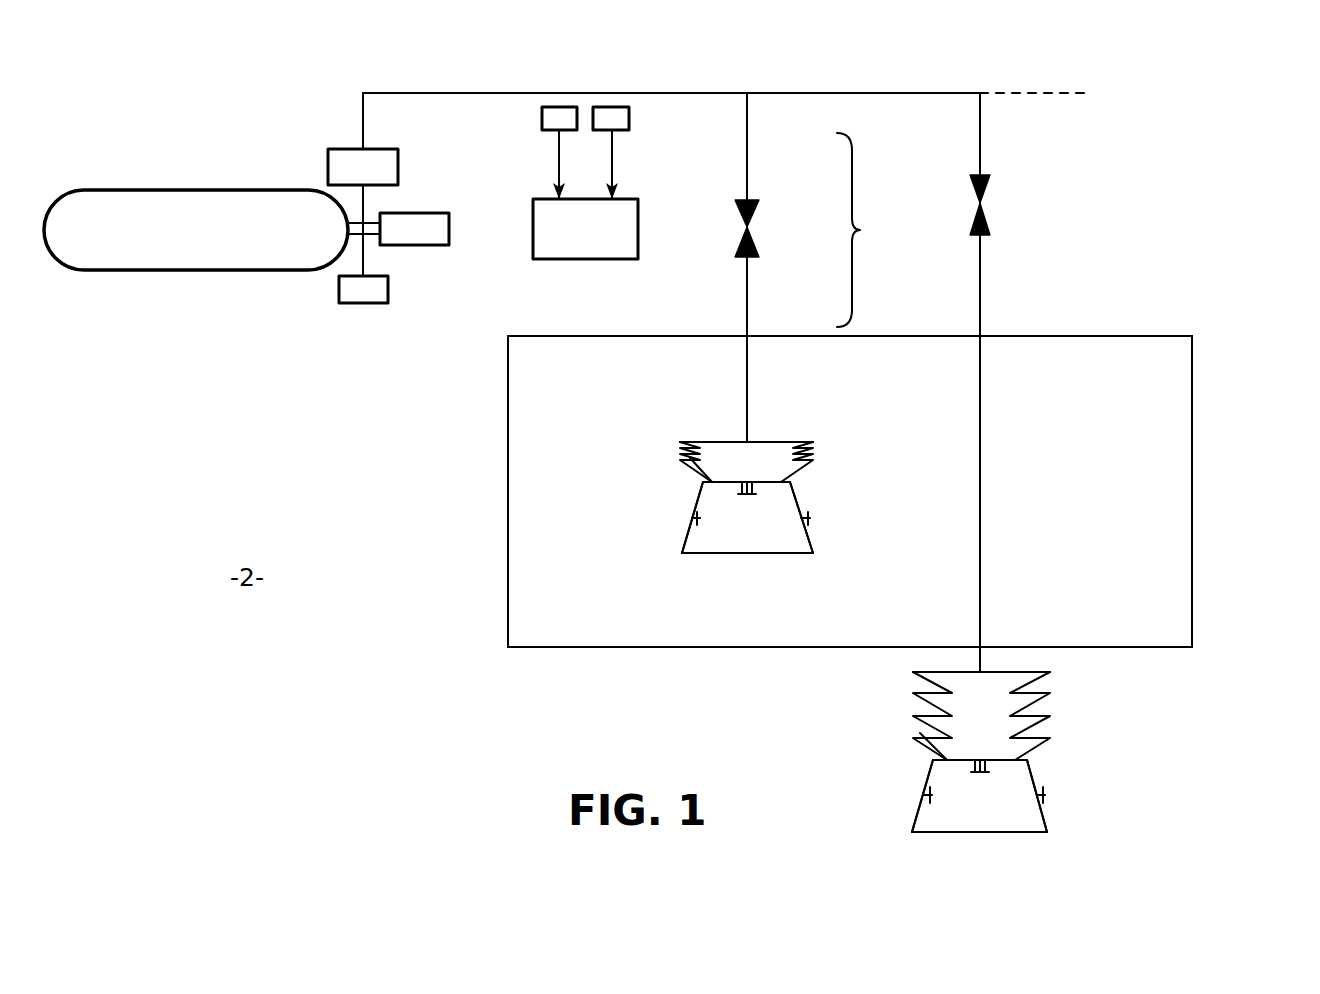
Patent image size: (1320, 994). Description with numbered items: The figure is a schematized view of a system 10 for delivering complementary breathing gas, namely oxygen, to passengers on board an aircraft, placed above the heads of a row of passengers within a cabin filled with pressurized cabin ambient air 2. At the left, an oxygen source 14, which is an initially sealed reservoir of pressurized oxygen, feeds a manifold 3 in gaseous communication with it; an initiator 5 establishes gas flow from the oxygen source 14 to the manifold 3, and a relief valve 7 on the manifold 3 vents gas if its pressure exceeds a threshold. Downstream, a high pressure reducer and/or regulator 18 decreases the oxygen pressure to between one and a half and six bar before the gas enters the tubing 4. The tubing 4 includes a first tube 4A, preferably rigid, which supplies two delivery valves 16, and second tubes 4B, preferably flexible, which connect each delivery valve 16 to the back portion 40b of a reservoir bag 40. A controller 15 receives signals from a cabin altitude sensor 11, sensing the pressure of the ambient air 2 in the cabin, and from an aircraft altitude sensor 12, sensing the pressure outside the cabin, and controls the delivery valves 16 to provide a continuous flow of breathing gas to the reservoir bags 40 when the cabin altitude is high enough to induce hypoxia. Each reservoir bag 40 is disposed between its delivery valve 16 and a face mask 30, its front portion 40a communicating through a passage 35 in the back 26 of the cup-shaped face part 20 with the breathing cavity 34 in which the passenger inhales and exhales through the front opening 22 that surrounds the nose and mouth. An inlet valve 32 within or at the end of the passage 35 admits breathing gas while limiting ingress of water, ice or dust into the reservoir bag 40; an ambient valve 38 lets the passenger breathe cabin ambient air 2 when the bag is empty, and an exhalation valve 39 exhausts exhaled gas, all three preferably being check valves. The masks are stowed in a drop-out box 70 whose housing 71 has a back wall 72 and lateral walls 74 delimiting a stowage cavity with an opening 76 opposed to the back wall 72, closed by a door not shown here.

The system 10 is at (1148, 107).
The oxygen source 14 is at (112, 188).
The regulator 18 is at (348, 148).
The manifold 3 is at (367, 220).
The initiator 5 is at (427, 248).
The relief valve 7 is at (358, 305).
The cabin altitude sensor 11 is at (555, 106).
The aircraft altitude sensor 12 is at (614, 106).
The controller 15 is at (559, 260).
The tubing 4 is at (856, 230).
The first tube 4A is at (748, 170).
The second tube 4B is at (748, 287).
The delivery valve 16 is at (742, 213).
The housing 71 is at (1208, 377).
The back wall 72 is at (1127, 336).
The lateral walls 74 is at (508, 422).
The opening 76 is at (548, 660).
The box 70 is at (1235, 668).
The reservoir bag 40 is at (832, 445).
The front portion 40a is at (790, 478).
The back portion 40b is at (788, 440).
The back 26 is at (712, 480).
The face mask 30 is at (663, 547).
The face part 20 is at (685, 533).
The front opening 22 is at (802, 560).
The breathing cavity 34 is at (723, 542).
The inlet valve 32 is at (752, 488).
The passage 35 is at (755, 485).
The ambient valve 38 is at (690, 518).
The exhalation valve 39 is at (808, 522).
The cabin ambient air 2 is at (245, 577).